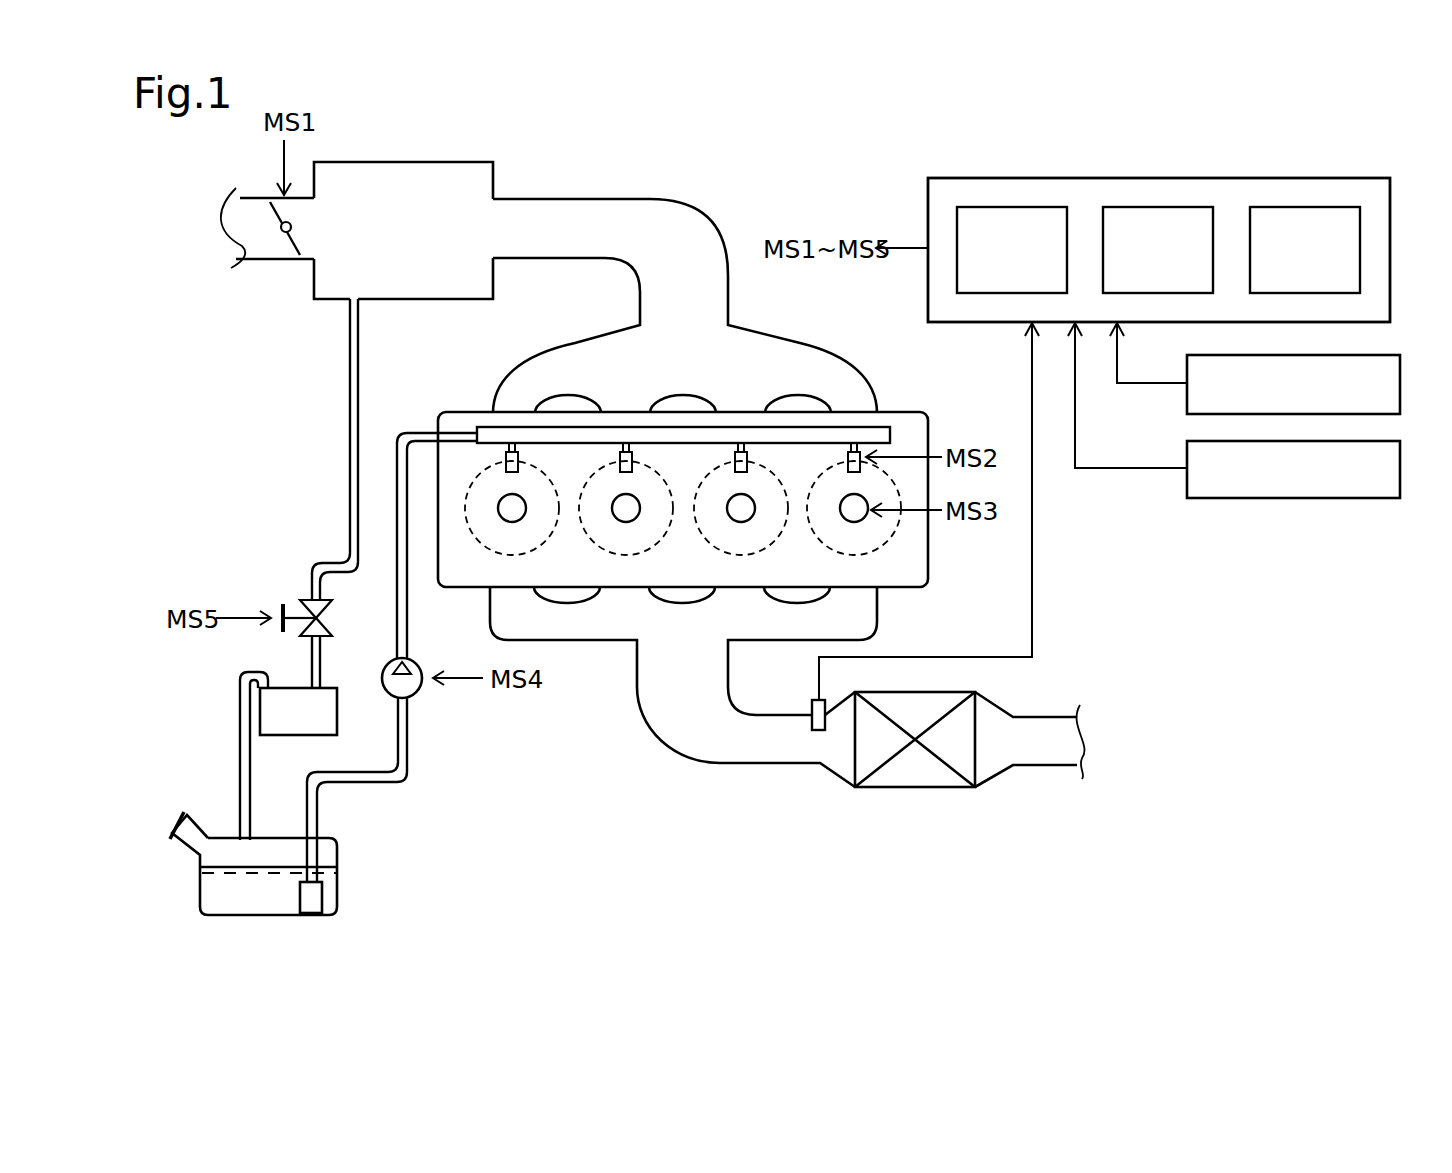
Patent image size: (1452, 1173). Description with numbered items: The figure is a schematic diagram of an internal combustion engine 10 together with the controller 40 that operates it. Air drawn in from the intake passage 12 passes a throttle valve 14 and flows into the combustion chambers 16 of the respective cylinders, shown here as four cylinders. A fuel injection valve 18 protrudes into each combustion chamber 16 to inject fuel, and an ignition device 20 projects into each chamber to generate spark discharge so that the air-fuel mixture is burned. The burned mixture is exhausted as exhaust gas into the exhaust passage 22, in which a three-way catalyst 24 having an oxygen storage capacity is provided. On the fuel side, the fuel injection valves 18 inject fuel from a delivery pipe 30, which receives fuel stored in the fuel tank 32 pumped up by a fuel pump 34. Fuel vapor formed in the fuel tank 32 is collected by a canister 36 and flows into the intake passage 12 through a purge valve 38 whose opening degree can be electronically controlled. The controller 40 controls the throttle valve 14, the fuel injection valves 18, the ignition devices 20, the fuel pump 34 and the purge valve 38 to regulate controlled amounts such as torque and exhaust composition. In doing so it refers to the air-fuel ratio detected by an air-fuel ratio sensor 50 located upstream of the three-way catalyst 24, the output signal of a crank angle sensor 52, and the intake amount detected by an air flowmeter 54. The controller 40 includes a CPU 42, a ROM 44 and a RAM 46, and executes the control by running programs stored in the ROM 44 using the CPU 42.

The internal combustion engine 10 is at (742, 156).
The intake passage 12 is at (246, 262).
The throttle valve 14 is at (273, 208).
The combustion chambers 16 is at (548, 475).
The fuel injection valve 18 is at (505, 456).
The ignition device 20 is at (527, 518).
The exhaust passage 22 is at (856, 612).
The three-way catalyst 24 is at (916, 777).
The delivery pipe 30 is at (882, 425).
The fuel tank 32 is at (338, 846).
The fuel pump 34 is at (413, 694).
The canister 36 is at (337, 722).
The purge valve 38 is at (330, 621).
The controller 40 is at (1366, 178).
The CPU 42 is at (1010, 207).
The ROM 44 is at (1158, 207).
The RAM 46 is at (1305, 207).
The air-fuel ratio sensor 50 is at (810, 700).
The crank angle sensor 52 is at (1402, 387).
The air flowmeter 54 is at (1402, 472).